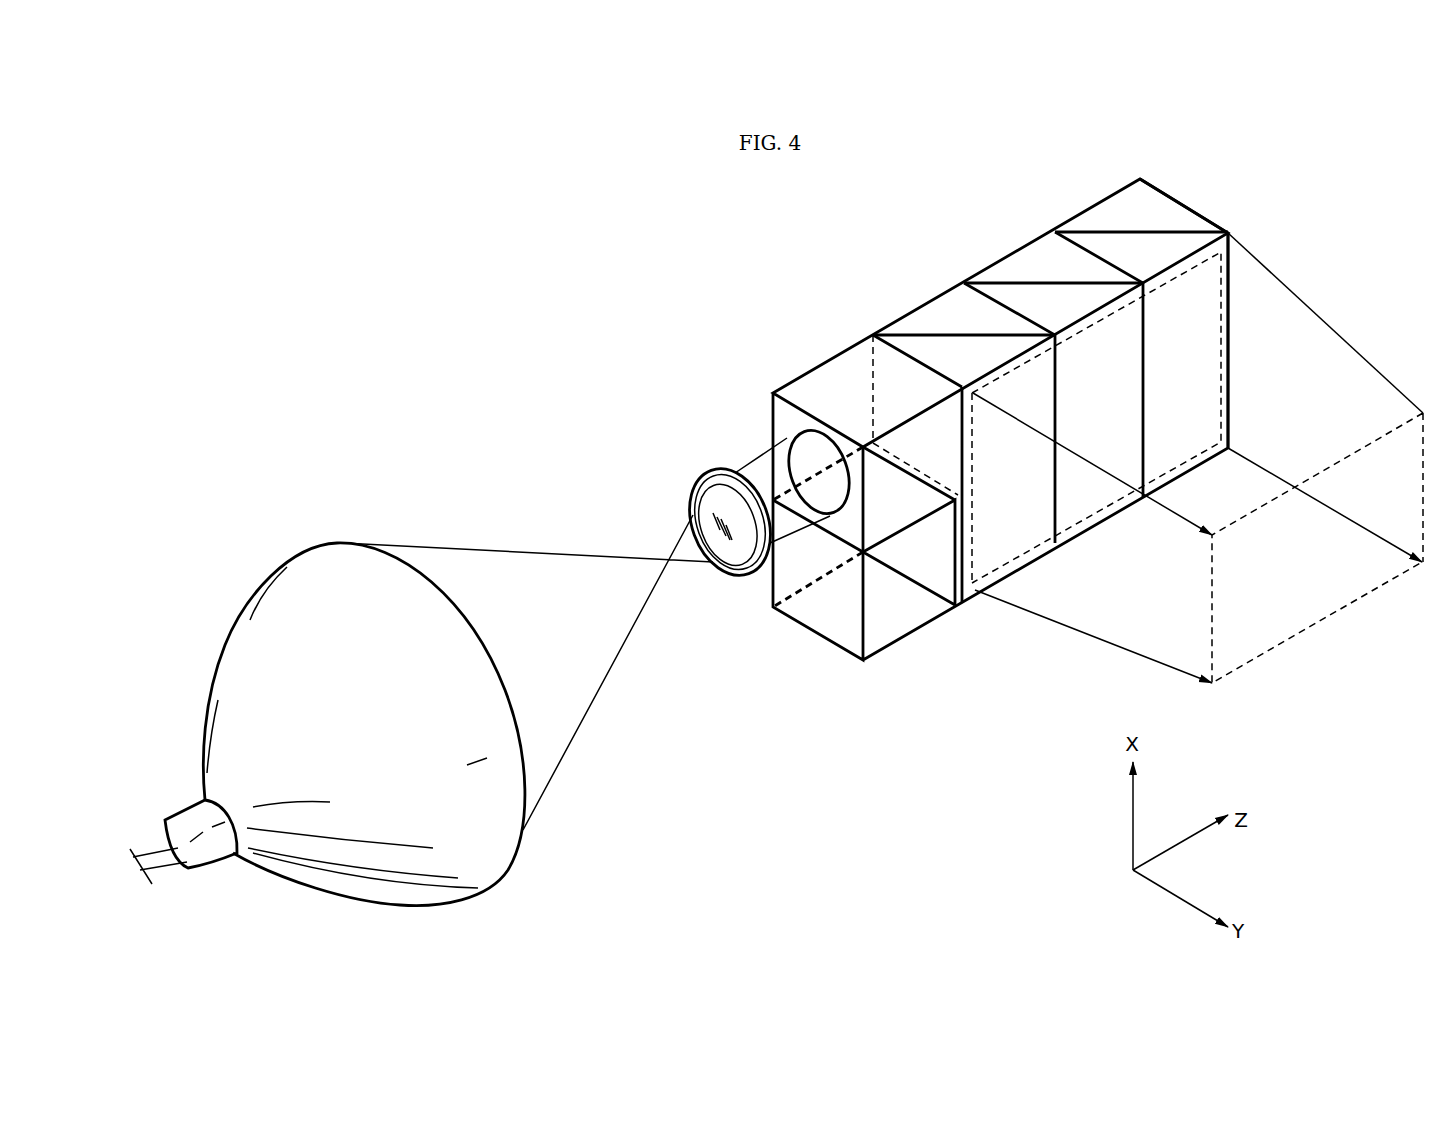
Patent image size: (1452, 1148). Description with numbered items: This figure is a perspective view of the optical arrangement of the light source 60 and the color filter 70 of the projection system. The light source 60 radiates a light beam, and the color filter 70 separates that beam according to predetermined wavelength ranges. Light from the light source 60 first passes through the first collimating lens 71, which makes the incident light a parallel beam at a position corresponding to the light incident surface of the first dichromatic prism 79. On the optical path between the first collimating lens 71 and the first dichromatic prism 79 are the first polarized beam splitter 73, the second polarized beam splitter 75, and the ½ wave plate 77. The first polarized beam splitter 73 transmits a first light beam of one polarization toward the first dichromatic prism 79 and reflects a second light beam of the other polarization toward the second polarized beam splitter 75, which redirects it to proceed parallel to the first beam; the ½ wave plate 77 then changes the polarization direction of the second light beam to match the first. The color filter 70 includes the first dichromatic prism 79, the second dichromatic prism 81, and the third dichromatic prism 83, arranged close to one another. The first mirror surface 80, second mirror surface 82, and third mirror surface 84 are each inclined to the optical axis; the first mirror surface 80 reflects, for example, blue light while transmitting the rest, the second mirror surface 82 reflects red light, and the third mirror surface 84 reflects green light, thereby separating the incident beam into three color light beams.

The light source 60 is at (280, 545).
The color filter 70 is at (1202, 185).
The first collimating lens 71 is at (712, 470).
The first polarized beam splitter 73 is at (826, 360).
The second polarized beam splitter 75 is at (903, 635).
The ½ wave plate 77 is at (957, 605).
The first dichromatic prism 79 is at (927, 300).
The first mirror surface 80 is at (915, 333).
The second dichromatic prism 81 is at (1017, 250).
The second mirror surface 82 is at (1005, 282).
The third dichromatic prism 83 is at (1107, 200).
The third mirror surface 84 is at (1093, 228).